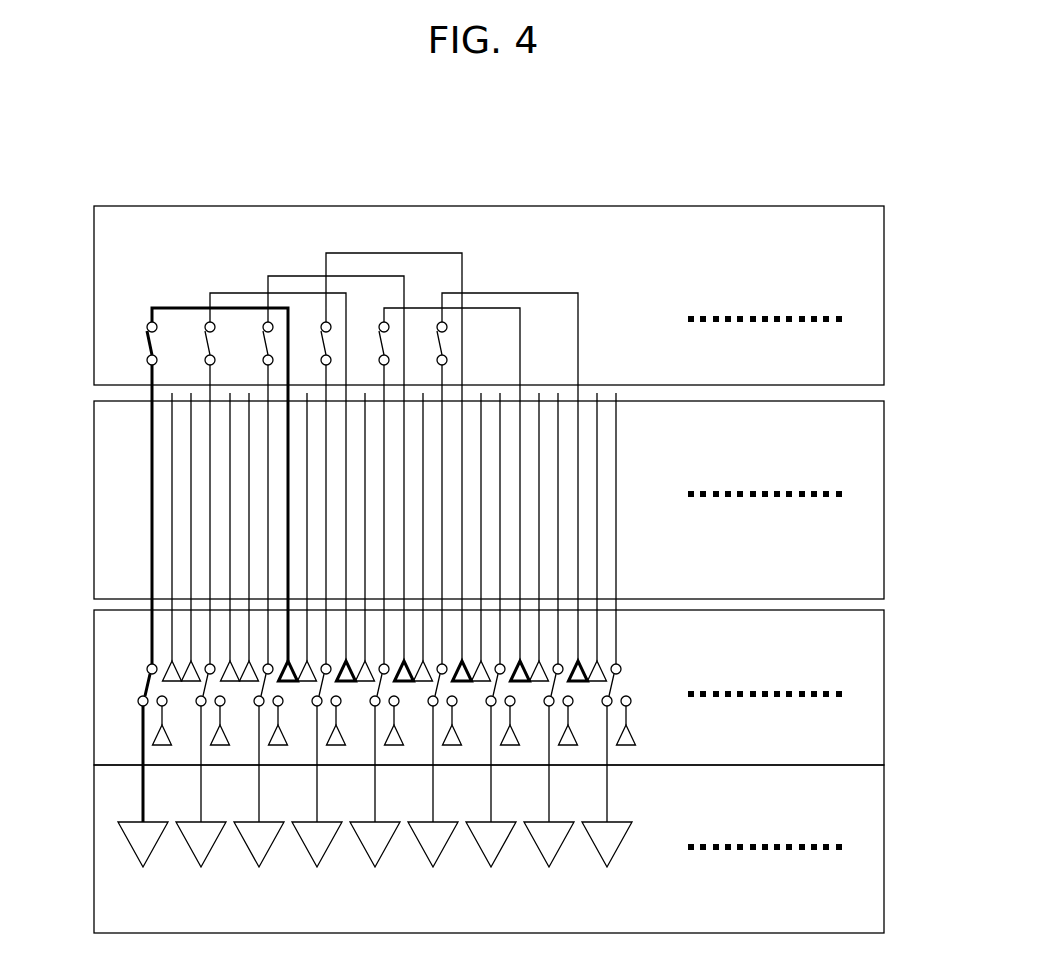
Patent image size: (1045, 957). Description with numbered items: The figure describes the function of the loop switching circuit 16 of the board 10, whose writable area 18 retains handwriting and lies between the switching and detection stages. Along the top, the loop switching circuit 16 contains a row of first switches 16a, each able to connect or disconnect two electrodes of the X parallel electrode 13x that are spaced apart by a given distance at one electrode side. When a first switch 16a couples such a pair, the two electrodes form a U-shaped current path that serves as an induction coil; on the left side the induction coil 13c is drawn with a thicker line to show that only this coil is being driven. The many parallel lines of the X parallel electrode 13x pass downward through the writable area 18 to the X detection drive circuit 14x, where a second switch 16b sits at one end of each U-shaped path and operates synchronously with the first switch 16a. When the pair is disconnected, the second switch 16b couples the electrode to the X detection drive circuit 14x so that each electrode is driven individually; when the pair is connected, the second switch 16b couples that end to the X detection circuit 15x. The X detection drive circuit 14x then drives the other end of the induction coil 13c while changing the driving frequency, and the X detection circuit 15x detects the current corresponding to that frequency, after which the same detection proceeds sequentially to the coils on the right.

The board 10 is at (839, 132).
The induction coil 13c is at (182, 307).
The X parallel electrode 13x is at (152, 490).
The X detection drive circuit 14x is at (884, 625).
The X detection circuit 15x is at (884, 787).
The loop switching circuit 16 is at (884, 227).
The first switch 16a is at (142, 342).
The second switch 16b is at (148, 682).
The writable area 18 is at (884, 427).